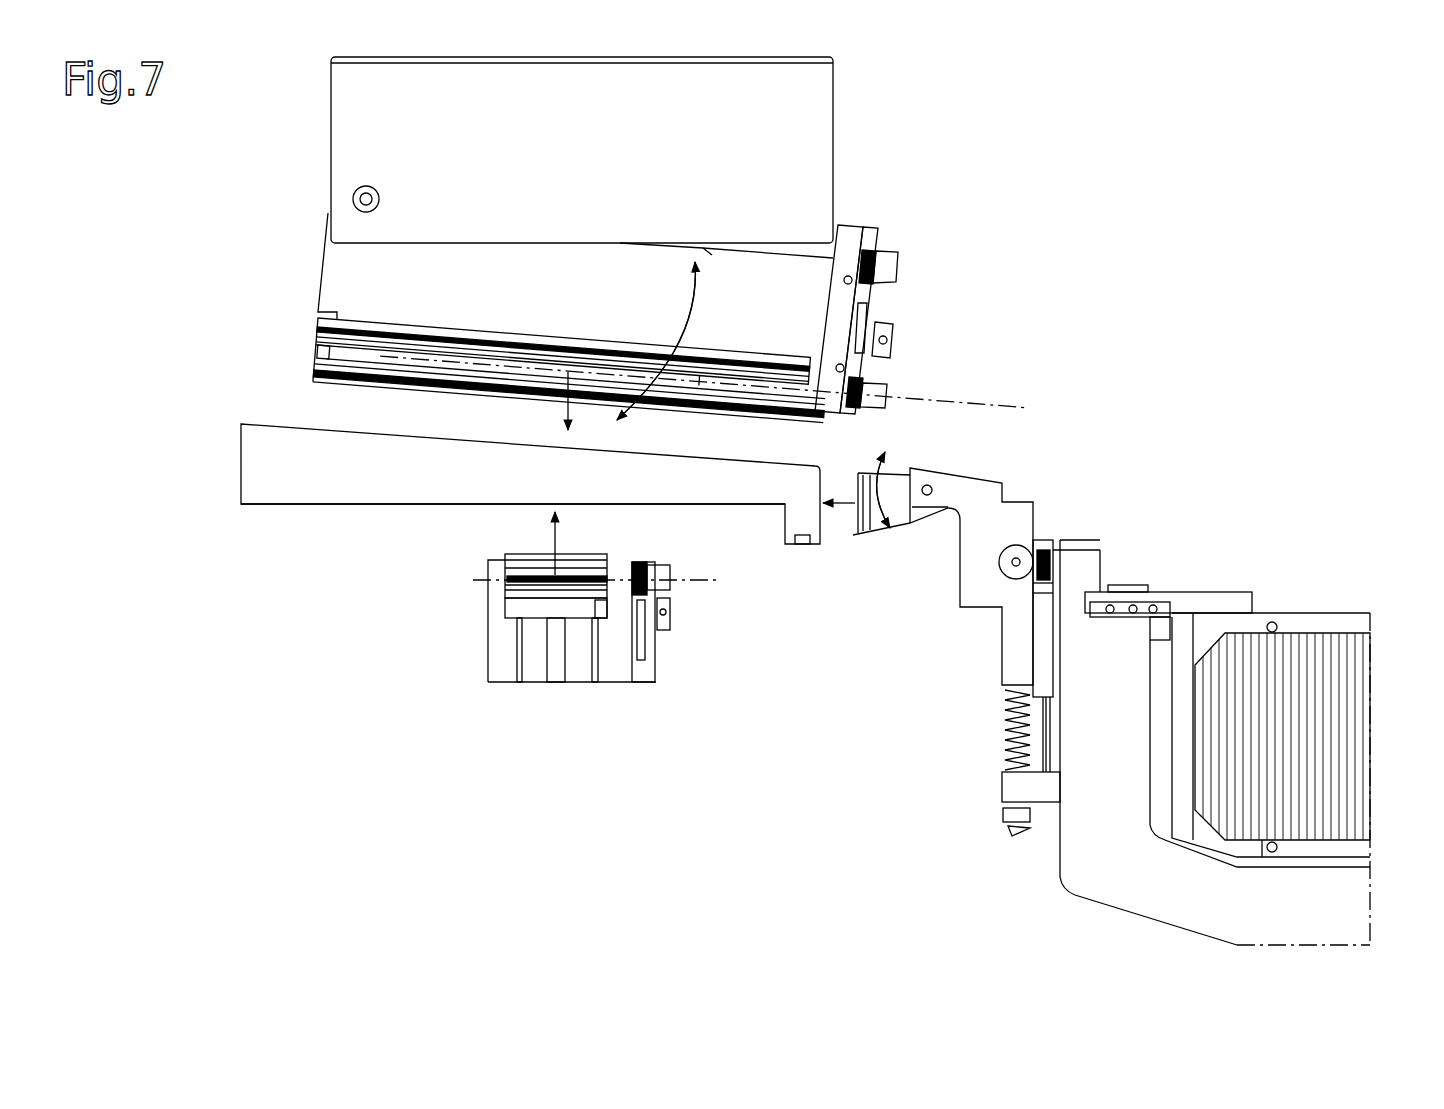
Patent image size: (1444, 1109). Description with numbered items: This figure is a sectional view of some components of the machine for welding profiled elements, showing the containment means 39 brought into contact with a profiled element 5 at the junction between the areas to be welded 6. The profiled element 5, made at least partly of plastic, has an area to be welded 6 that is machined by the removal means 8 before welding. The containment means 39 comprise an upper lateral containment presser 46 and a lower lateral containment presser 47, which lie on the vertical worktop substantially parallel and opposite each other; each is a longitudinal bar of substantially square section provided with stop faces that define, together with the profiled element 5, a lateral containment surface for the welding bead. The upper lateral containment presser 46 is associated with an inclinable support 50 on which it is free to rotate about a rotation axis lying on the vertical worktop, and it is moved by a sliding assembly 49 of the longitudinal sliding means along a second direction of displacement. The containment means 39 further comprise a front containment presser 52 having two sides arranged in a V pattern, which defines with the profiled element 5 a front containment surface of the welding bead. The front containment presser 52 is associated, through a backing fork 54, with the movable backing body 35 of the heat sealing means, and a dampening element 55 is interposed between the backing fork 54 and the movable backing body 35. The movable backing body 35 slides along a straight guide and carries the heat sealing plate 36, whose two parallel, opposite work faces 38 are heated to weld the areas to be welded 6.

The profiled element 5 is at (268, 424).
The area to be welded 6 is at (313, 470).
The removal means 8 is at (1043, 853).
The movable backing body 35 is at (1155, 890).
The heat sealing plate 36 is at (1313, 627).
The work face 38 is at (1303, 737).
The containment means 39 is at (1003, 347).
The upper lateral containment presser 46 is at (825, 343).
The lower lateral containment presser 47 is at (584, 596).
The sliding assembly 49 is at (598, 158).
The inclinable support 50 is at (763, 295).
The front containment presser 52 is at (870, 530).
The backing fork 54 is at (990, 492).
The dampening element 55 is at (1000, 722).